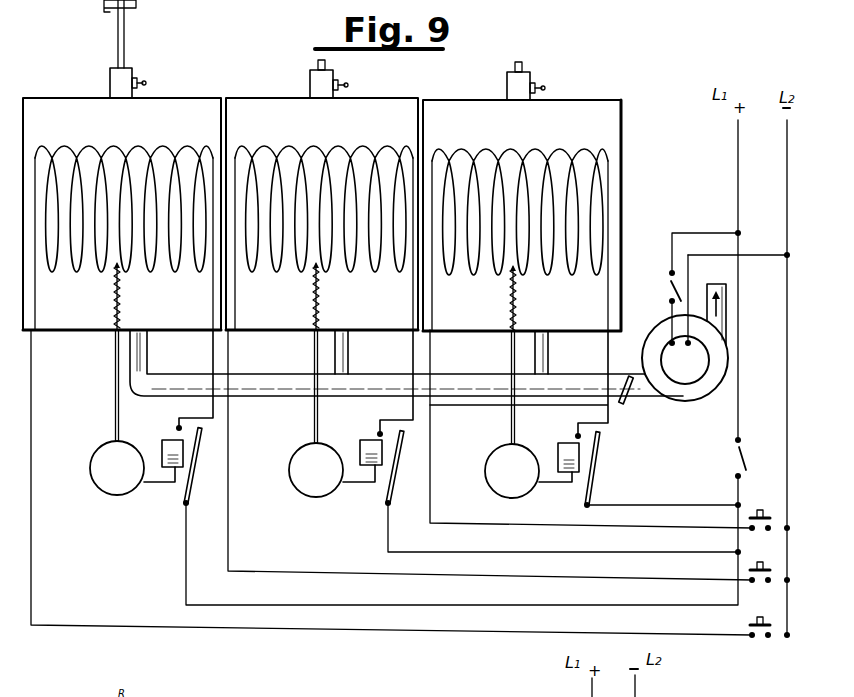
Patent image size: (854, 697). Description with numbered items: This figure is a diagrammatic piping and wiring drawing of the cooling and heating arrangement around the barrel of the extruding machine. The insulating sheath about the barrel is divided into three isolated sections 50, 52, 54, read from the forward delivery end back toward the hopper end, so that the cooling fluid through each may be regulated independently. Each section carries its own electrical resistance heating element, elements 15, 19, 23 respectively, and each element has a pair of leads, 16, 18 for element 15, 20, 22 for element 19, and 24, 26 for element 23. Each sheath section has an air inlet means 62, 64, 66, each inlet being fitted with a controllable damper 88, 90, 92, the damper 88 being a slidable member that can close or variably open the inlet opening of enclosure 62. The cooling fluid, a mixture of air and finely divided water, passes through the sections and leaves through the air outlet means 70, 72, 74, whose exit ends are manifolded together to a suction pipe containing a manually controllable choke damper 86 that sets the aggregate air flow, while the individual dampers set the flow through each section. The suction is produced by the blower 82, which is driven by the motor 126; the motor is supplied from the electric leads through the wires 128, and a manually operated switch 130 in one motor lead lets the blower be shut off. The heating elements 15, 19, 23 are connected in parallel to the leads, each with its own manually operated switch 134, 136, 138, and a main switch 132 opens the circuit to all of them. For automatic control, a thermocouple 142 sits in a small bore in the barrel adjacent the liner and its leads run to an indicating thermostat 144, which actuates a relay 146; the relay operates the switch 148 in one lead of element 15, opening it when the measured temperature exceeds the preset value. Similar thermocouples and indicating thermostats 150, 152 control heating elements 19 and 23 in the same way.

The heating element 15 is at (124, 147).
The lead 16 is at (33, 314).
The lead 18 is at (213, 292).
The heating element 19 is at (326, 150).
The lead 20 is at (235, 306).
The lead 22 is at (412, 311).
The heating element 23 is at (526, 153).
The lead 24 is at (432, 306).
The lead 26 is at (610, 313).
The sheath section 50 is at (186, 106).
The sheath section 52 is at (250, 104).
The sheath section 54 is at (465, 110).
The air inlet means 62 is at (121, 70).
The air inlet means 64 is at (310, 85).
The air inlet means 66 is at (524, 72).
The air outlet means 70 is at (148, 353).
The air outlet means 72 is at (348, 355).
The air outlet means 74 is at (548, 357).
The blower 82 is at (700, 398).
The choke damper 86 is at (630, 402).
The damper 88 is at (140, 82).
The damper 90 is at (340, 86).
The damper 92 is at (540, 88).
The motor 126 is at (683, 375).
The wires 128 is at (705, 255).
The switch 130 is at (669, 288).
The main switch 132 is at (741, 462).
The switch 134 is at (756, 640).
The switch 136 is at (752, 582).
The switch 138 is at (753, 530).
The thermocouple 142 is at (116, 292).
The indicating thermostat 144 is at (113, 492).
The relay 146 is at (164, 448).
The switch 148 is at (203, 433).
The indicating thermostat 150 is at (310, 490).
The indicating thermostat 152 is at (498, 478).